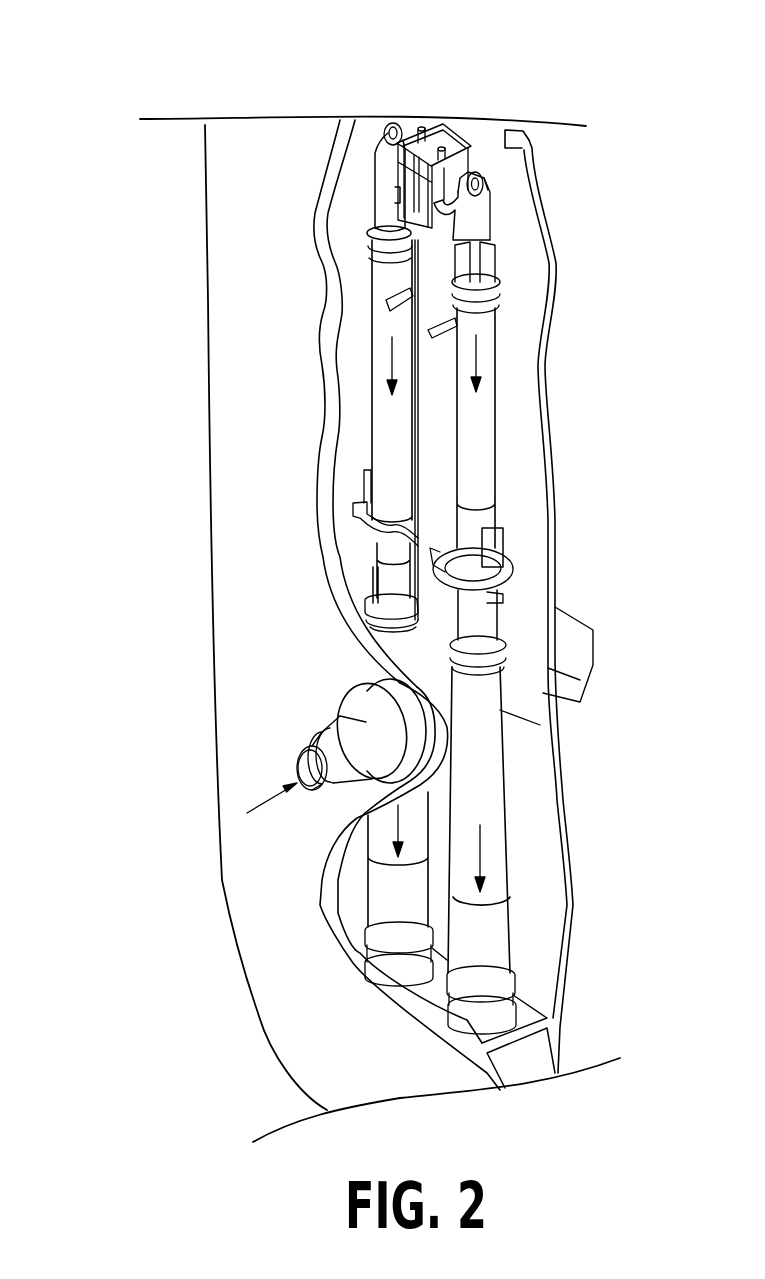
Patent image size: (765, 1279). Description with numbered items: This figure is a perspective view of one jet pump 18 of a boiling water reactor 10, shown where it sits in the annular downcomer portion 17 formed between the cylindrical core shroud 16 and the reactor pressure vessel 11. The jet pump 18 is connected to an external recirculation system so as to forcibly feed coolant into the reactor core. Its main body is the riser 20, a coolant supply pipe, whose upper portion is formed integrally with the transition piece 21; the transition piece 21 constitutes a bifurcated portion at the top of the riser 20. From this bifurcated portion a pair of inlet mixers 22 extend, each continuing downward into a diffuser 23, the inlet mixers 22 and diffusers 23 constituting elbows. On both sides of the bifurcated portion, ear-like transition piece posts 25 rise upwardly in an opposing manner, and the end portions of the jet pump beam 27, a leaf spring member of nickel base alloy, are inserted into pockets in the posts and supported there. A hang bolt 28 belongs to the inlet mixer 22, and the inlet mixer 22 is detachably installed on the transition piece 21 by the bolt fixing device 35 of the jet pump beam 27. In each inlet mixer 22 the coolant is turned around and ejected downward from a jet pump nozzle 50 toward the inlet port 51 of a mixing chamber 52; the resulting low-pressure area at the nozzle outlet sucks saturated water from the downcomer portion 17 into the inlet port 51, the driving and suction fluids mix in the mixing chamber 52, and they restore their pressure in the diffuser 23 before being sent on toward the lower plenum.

The boiling water reactor 10 is at (198, 68).
The reactor pressure vessel 11 is at (205, 233).
The core shroud 16 is at (557, 488).
The downcomer portion 17 is at (522, 802).
The jet pump 18 is at (503, 187).
The riser 20 is at (430, 462).
The transition piece 21 is at (481, 231).
The inlet mixer 22 is at (488, 203).
The diffuser 23 is at (503, 745).
The transition piece post 25 is at (458, 138).
The jet pump beam 27 is at (440, 118).
The hang bolt 28 is at (383, 127).
The bolt fixing device 35 is at (408, 124).
The jet pump nozzle 50 is at (481, 263).
The inlet port 51 is at (497, 292).
The mixing chamber 52 is at (497, 373).